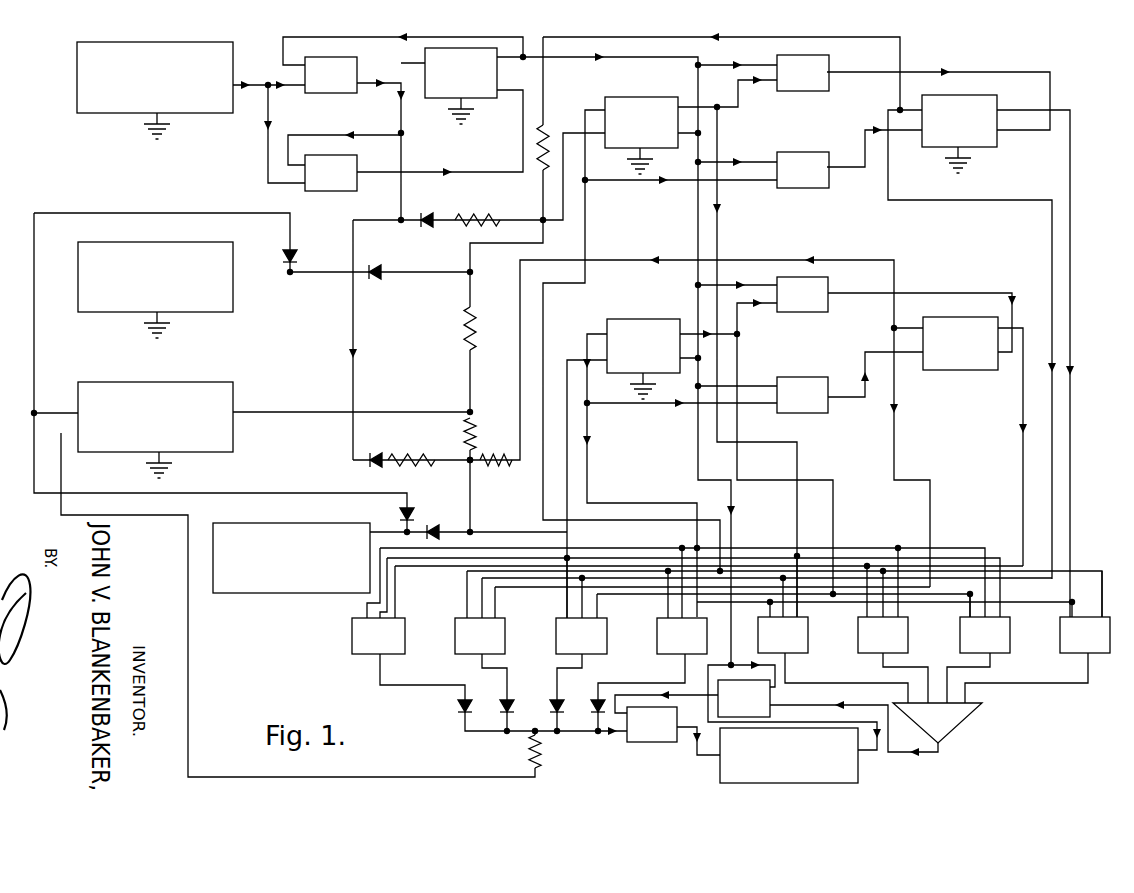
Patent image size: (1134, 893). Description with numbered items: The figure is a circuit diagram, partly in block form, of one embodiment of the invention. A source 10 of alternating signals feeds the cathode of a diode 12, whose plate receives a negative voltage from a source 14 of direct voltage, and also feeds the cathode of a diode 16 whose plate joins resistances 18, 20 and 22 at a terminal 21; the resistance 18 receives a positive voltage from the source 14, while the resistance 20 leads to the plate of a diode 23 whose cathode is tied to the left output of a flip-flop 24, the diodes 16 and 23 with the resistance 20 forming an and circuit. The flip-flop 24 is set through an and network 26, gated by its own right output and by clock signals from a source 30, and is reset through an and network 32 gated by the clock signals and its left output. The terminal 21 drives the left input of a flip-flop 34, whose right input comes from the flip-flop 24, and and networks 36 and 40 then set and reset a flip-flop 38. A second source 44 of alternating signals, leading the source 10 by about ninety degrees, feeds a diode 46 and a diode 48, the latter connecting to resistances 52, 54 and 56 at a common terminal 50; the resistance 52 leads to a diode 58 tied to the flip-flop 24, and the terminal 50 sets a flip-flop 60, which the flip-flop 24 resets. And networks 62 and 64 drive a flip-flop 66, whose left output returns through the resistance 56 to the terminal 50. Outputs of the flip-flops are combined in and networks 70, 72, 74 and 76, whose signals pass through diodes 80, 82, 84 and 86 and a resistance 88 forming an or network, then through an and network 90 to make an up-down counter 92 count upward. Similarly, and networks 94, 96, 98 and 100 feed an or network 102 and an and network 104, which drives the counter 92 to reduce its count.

The source of alternating signals 10 is at (233, 294).
The diode 12 is at (296, 261).
The source of direct voltage 14 is at (233, 434).
The diode 16 is at (376, 277).
The resistance 18 is at (465, 334).
The resistance 20 is at (478, 216).
The terminal 21 is at (545, 221).
The resistance 22 is at (541, 168).
The diode 23 is at (427, 214).
The flip-flop 24 is at (482, 98).
The and network 26 is at (342, 57).
The source of clock signals 30 is at (172, 42).
The and network 32 is at (307, 155).
The flip-flop 34 is at (633, 97).
The and network 36 is at (800, 188).
The flip-flop 38 is at (984, 147).
The and network 40 is at (800, 91).
The source of alternating signals 44 is at (297, 594).
The diode 46 is at (401, 514).
The diode 48 is at (427, 528).
The common terminal 50 is at (472, 463).
The resistance 52 is at (412, 457).
The resistance 54 is at (477, 436).
The resistance 56 is at (507, 466).
The diode 58 is at (373, 459).
The flip-flop 60 is at (627, 319).
The and network 62 is at (809, 413).
The and network 64 is at (806, 312).
The flip-flop 66 is at (970, 371).
The and network 70 is at (395, 655).
The and network 72 is at (506, 649).
The and network 74 is at (589, 655).
The and network 76 is at (676, 655).
The diode 80 is at (462, 712).
The diode 82 is at (503, 712).
The diode 84 is at (550, 712).
The diode 86 is at (591, 714).
The resistance 88 is at (539, 751).
The and network 90 is at (655, 743).
The up-down counter 92 is at (858, 757).
The and network 94 is at (810, 653).
The and network 96 is at (908, 636).
The and network 98 is at (997, 653).
The and network 100 is at (1105, 653).
The or network 102 is at (958, 723).
The and network 104 is at (772, 702).